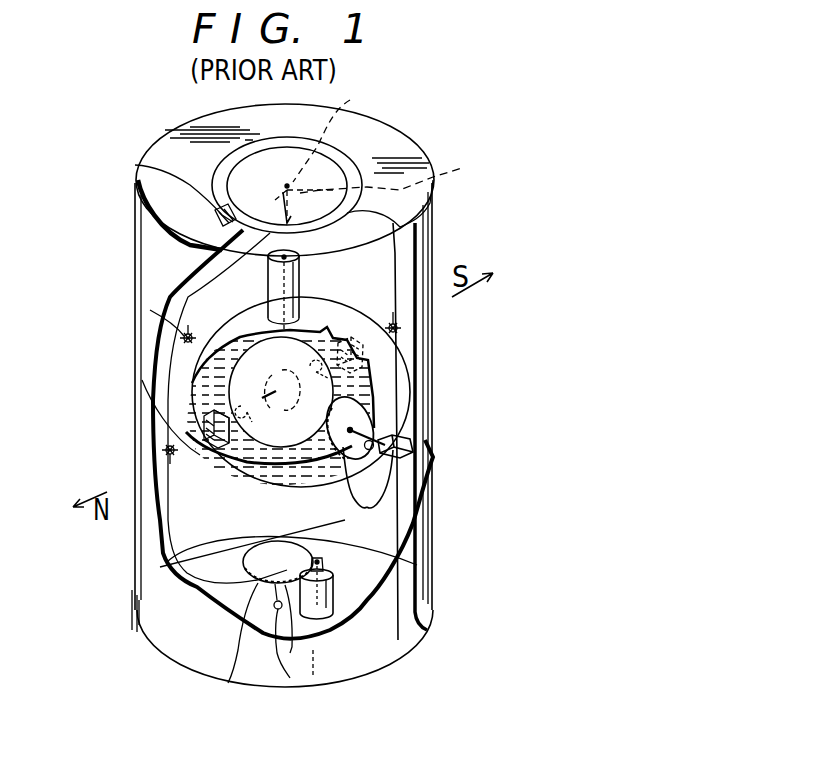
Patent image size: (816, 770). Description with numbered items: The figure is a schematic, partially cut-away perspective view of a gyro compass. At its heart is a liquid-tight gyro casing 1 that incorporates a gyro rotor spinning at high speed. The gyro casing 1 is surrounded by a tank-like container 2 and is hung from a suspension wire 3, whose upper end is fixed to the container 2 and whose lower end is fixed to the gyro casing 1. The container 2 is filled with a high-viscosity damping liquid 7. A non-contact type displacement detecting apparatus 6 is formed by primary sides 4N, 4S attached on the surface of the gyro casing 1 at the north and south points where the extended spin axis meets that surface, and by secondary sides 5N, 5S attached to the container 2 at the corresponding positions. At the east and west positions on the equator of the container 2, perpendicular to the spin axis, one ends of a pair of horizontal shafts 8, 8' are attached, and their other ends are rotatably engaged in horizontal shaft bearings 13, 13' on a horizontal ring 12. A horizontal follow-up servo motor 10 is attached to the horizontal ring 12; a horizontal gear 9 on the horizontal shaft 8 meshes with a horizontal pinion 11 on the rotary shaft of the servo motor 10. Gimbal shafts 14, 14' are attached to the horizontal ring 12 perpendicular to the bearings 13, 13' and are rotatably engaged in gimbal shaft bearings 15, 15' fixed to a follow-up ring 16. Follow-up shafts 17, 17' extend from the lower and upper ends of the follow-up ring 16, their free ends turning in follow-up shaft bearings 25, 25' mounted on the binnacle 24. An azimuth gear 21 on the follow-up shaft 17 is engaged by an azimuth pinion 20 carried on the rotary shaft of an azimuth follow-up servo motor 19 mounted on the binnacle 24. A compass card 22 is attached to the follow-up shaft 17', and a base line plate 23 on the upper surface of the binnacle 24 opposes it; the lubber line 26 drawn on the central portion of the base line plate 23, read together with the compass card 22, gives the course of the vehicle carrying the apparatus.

The gyro casing 1 is at (229, 385).
The container 2 is at (193, 372).
The suspension wire 3 is at (268, 313).
The primary side 4N is at (237, 452).
The secondary side 5N is at (207, 448).
The primary side 4S is at (436, 365).
The secondary side 5S is at (438, 341).
The non-contact type displacement detecting apparatus 6 is at (487, 312).
The liquid 7 is at (294, 477).
The horizontal shaft 8 is at (368, 477).
The horizontal shaft 8' is at (138, 302).
The horizontal gear 9 is at (392, 537).
The horizontal follow-up servo motor 10 is at (412, 452).
The horizontal pinion 11 is at (395, 440).
The horizontal ring 12 is at (410, 373).
The horizontal shaft bearing 13 is at (405, 457).
The horizontal shaft bearing 13' is at (200, 315).
The gimbal shaft 14 is at (138, 430).
The gimbal shaft 14' is at (306, 342).
The gimbal shaft bearing 15 is at (255, 409).
The gimbal shaft bearing 15' is at (380, 295).
The follow-up ring 16 is at (395, 258).
The follow-up shaft 17 is at (326, 656).
The follow-up shaft 17' is at (401, 166).
The azimuth follow-up servo motor 19 is at (337, 610).
The azimuth pinion 20 is at (330, 560).
The azimuth gear 21 is at (228, 683).
The compass card 22 is at (352, 163).
The base line plate 23 is at (136, 166).
The binnacle 24 is at (432, 630).
The follow-up shaft bearing 25 is at (293, 654).
The follow-up shaft bearing 25' is at (342, 132).
The lubber line 26 is at (215, 211).